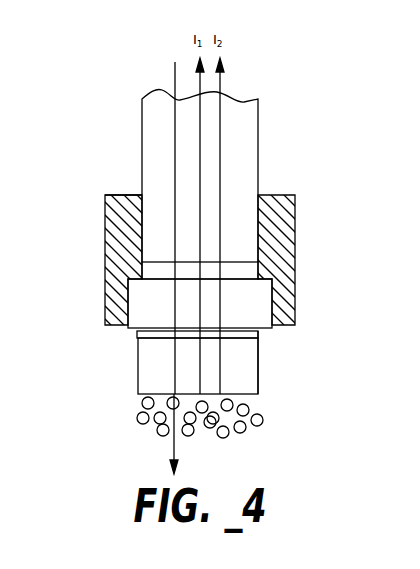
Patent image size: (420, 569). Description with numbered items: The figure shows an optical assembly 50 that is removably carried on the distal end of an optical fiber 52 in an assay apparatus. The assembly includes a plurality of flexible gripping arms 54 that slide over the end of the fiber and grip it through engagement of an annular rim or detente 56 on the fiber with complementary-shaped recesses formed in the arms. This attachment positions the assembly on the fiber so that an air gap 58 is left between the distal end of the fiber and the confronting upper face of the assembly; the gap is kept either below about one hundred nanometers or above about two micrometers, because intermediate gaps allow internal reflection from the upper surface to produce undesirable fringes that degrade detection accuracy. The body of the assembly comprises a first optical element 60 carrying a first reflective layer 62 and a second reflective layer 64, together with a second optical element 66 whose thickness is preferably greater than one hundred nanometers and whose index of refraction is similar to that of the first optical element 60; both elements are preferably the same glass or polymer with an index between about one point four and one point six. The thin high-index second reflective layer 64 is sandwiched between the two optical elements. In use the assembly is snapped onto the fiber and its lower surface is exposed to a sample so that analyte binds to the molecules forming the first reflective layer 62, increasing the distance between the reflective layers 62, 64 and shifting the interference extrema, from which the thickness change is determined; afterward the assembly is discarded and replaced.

The optical assembly 50 is at (268, 364).
The optical fiber 52 is at (241, 144).
The flexible gripping arms 54 is at (104, 281).
The annular rim or detente 56 is at (137, 222).
The air gap 58 is at (238, 275).
The first optical element 60 is at (142, 368).
The first reflective layer 62 is at (140, 408).
The second reflective layer 64 is at (140, 334).
The second optical element 66 is at (252, 318).